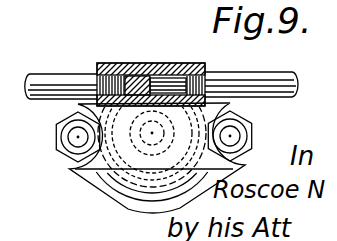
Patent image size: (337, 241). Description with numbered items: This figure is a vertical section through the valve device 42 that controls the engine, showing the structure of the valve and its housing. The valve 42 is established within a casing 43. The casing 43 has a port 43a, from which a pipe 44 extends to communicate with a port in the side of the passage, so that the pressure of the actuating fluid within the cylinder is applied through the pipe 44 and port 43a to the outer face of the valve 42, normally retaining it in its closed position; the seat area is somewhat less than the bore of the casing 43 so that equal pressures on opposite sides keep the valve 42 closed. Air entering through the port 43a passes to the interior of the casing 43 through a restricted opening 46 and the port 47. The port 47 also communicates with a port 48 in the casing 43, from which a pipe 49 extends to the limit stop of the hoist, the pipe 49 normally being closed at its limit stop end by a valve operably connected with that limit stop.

The valve device 42 is at (117, 159).
The casing 43 is at (142, 185).
The port 43a is at (120, 71).
The pipe 44 is at (50, 78).
The restricted opening 46 is at (137, 80).
The port 47 is at (161, 90).
The port 48 is at (175, 88).
The pipe 49 is at (222, 77).